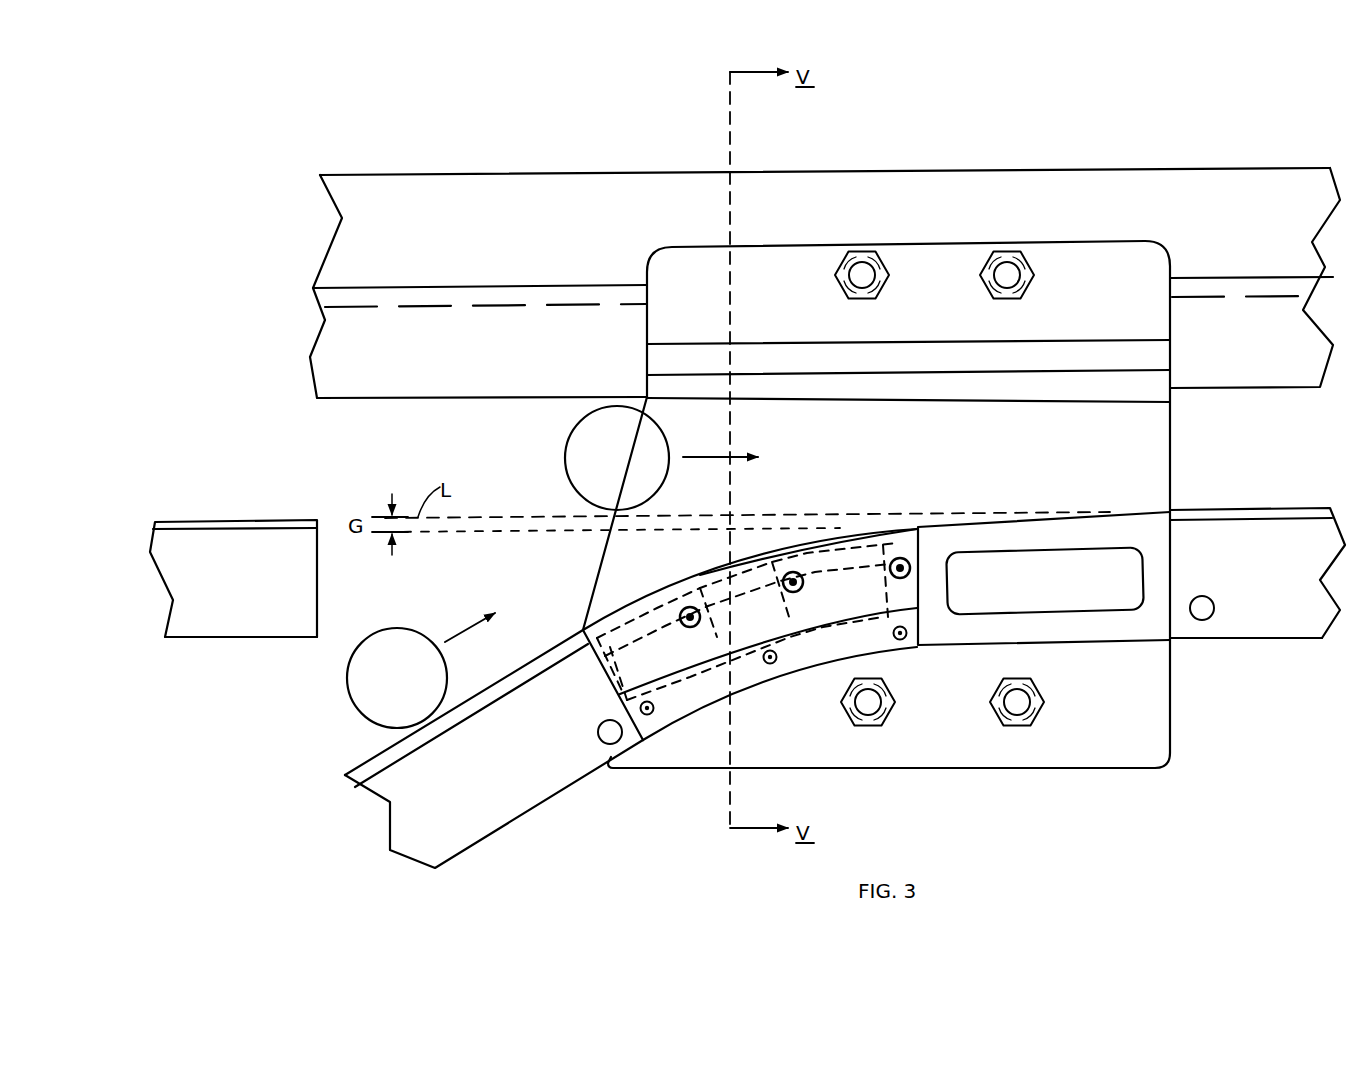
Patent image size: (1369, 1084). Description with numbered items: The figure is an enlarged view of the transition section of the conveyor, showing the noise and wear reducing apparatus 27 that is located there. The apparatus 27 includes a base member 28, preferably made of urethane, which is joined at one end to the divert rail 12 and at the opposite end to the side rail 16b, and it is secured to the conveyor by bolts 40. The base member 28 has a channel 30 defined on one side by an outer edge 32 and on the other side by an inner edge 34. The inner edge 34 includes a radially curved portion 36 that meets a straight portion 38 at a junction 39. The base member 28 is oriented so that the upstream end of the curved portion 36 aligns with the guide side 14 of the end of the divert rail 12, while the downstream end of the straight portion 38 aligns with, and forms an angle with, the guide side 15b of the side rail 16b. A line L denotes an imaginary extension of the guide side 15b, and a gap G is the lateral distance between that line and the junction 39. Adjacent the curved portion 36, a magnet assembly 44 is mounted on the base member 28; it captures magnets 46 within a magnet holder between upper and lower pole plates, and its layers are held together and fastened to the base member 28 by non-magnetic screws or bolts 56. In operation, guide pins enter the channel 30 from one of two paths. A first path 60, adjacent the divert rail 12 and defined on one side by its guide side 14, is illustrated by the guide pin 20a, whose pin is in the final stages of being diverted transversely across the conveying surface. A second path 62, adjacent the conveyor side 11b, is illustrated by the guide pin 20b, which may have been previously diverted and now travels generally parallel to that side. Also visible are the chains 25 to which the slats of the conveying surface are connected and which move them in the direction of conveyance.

The conveyor side 11b is at (468, 268).
The chains 25 is at (530, 305).
The base member 28 is at (765, 293).
The bolts 40 is at (1012, 248).
The channel 30 is at (1105, 447).
The outer edge 32 is at (872, 405).
The inner edge 34 is at (838, 530).
The straight portion 38 is at (1007, 522).
The junction 39 is at (920, 546).
The guide side 15b is at (245, 518).
The side rail 16b is at (240, 595).
The guide pin 20a is at (400, 658).
The guide pin 20b is at (612, 448).
The second path 62 is at (720, 445).
The first path 60 is at (470, 625).
The radially curved portion 36 is at (640, 595).
The guide side 14 is at (545, 655).
The magnets 46 is at (578, 663).
The non-magnetic screws or bolts 56 is at (770, 663).
The magnet assembly 44 is at (680, 697).
The divert rail 12 is at (440, 792).
The noise and wear reducing apparatus 27 is at (1182, 774).